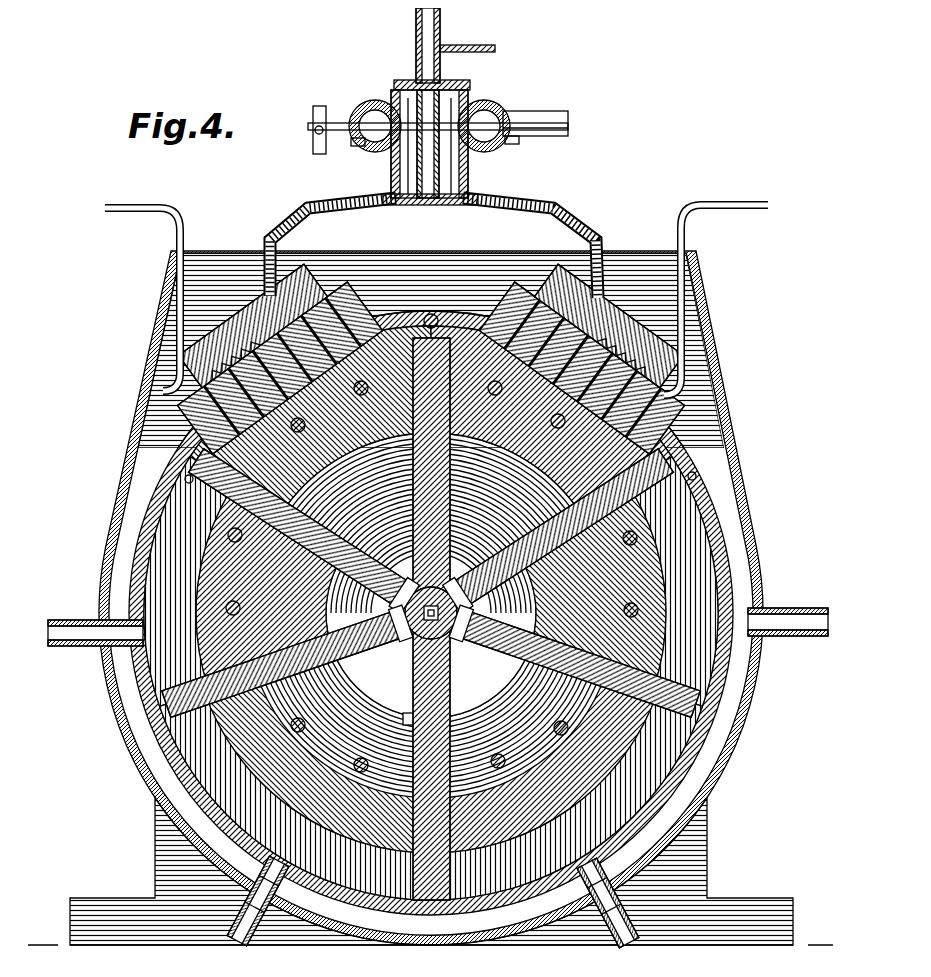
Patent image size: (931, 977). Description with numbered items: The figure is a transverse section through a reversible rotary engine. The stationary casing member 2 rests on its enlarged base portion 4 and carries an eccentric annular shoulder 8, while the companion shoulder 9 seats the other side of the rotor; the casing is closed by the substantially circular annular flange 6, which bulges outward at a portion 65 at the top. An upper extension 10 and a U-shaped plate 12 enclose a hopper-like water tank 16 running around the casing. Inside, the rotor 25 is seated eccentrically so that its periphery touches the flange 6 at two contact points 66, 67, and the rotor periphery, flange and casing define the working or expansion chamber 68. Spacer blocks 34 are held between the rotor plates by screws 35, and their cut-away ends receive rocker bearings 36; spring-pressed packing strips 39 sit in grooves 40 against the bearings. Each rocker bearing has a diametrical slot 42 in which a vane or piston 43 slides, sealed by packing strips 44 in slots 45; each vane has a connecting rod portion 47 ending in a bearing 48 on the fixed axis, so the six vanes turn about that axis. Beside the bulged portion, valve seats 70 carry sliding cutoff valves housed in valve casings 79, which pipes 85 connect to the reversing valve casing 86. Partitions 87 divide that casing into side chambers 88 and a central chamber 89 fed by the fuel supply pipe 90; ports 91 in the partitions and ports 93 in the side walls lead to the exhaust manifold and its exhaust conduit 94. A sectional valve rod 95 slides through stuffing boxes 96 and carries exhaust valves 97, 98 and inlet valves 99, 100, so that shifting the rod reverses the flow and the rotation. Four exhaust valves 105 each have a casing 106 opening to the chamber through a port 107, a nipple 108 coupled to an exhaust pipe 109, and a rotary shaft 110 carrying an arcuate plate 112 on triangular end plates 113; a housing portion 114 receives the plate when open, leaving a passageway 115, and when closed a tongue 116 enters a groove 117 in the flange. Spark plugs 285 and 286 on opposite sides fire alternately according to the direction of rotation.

The casing member 2 is at (372, 920).
The enlarged base portion 4 is at (725, 895).
The annular flange 6 is at (318, 946).
The annular shoulder 8 is at (428, 619).
The annular shoulder 9 is at (581, 870).
The extension 10 is at (625, 243).
The U-shaped wall or plate 12 is at (740, 530).
The water tank or cooler 16 is at (712, 492).
The rotor 25 is at (660, 592).
The spacer block 34 is at (416, 330).
The screw 35 is at (500, 715).
The rocker bearing 36 is at (200, 730).
The packing strip 39 is at (585, 632).
The groove 40 is at (572, 615).
The diametrical slot 42 is at (405, 730).
The vane or piston 43 is at (525, 560).
The packing strip 44 is at (260, 710).
The slot 45 is at (205, 630).
The connecting rod or attaching portion 47 is at (435, 520).
The bearing 48 is at (431, 621).
The outwardly curved portion 65 is at (495, 300).
The contact point 66 is at (350, 330).
The contact point 67 is at (500, 290).
The working or expansion chamber 68 is at (200, 755).
The valve seat 70 is at (300, 300).
The valve casing 79 is at (220, 310).
The pipe 85 is at (300, 200).
The reversing valve casing 86 is at (490, 88).
The partition 87 is at (420, 197).
The side chamber 88 is at (458, 197).
The central chamber 89 is at (400, 197).
The fuel supply pipe 90 is at (430, 30).
The port 91 is at (430, 76).
The port 93 is at (372, 95).
The exhaust conduit 94 is at (548, 105).
The valve rod 95 is at (316, 108).
The stuffing box 96 is at (355, 136).
The exhaust valve 97 is at (393, 72).
The exhaust valve 98 is at (470, 150).
The inlet valve 99 is at (382, 145).
The inlet valve 100 is at (462, 78).
The exhaust valve 105 is at (80, 612).
The casing 106 is at (160, 665).
The port 107 is at (619, 725).
The nipple 108 is at (45, 612).
The exhaust pipe 109 is at (635, 958).
The rotary shaft 110 is at (745, 640).
The arcuate plate 112 is at (110, 655).
The triangular end plate 113 is at (122, 610).
The housing portion 114 is at (640, 845).
The passageway 115 is at (752, 648).
The tongue 116 is at (604, 792).
The groove 117 is at (275, 804).
The spark plug 285 is at (688, 468).
The spark plug 286 is at (178, 470).